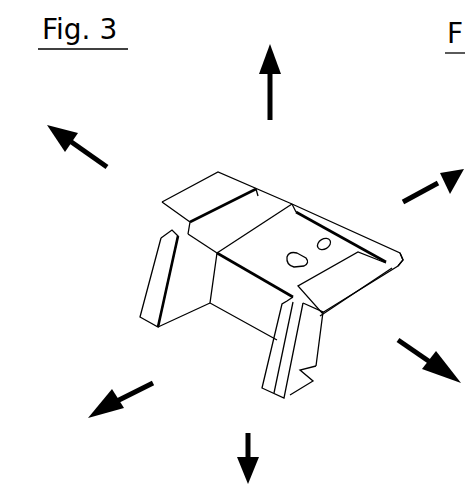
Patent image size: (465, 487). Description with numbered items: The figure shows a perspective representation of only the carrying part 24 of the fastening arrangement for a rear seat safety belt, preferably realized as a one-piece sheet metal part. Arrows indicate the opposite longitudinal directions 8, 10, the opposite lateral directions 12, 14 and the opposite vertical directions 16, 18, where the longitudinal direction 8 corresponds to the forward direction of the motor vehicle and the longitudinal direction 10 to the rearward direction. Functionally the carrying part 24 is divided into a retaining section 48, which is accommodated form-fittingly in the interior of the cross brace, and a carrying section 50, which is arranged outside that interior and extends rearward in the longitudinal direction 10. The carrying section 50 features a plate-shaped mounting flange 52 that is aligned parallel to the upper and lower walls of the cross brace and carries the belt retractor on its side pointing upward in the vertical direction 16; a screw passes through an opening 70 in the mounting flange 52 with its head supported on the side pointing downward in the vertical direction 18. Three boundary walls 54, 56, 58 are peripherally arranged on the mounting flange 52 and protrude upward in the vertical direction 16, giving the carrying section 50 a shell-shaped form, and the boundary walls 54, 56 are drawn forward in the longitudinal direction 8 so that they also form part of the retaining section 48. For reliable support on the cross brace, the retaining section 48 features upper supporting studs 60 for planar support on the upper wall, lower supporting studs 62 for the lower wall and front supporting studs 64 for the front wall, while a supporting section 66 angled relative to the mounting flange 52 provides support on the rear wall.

The longitudinal direction 8 is at (127, 393).
The longitudinal direction 10 is at (414, 176).
The lateral direction 12 is at (86, 161).
The lateral direction 14 is at (417, 352).
The vertical direction 16 is at (266, 95).
The vertical direction 18 is at (245, 448).
The carrying part 24 is at (328, 136).
The retaining section 48 is at (158, 198).
The carrying section 50 is at (258, 188).
The mounting flange 52 is at (295, 234).
The boundary wall 54 is at (277, 213).
The boundary wall 56 is at (396, 264).
The boundary wall 58 is at (339, 212).
The upper supporting stud 60 is at (190, 199).
The lower supporting stud 62 is at (303, 390).
The front supporting stud 64 is at (160, 277).
The supporting section 66 is at (243, 305).
The opening 70 is at (333, 242).